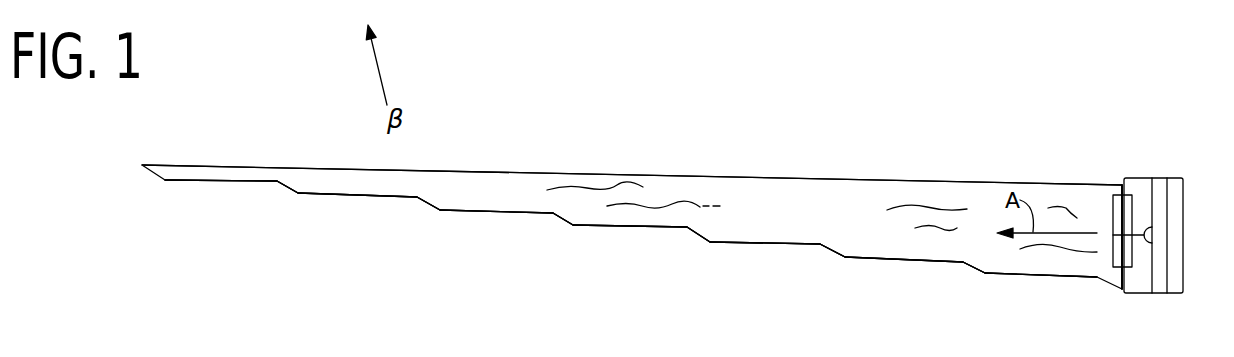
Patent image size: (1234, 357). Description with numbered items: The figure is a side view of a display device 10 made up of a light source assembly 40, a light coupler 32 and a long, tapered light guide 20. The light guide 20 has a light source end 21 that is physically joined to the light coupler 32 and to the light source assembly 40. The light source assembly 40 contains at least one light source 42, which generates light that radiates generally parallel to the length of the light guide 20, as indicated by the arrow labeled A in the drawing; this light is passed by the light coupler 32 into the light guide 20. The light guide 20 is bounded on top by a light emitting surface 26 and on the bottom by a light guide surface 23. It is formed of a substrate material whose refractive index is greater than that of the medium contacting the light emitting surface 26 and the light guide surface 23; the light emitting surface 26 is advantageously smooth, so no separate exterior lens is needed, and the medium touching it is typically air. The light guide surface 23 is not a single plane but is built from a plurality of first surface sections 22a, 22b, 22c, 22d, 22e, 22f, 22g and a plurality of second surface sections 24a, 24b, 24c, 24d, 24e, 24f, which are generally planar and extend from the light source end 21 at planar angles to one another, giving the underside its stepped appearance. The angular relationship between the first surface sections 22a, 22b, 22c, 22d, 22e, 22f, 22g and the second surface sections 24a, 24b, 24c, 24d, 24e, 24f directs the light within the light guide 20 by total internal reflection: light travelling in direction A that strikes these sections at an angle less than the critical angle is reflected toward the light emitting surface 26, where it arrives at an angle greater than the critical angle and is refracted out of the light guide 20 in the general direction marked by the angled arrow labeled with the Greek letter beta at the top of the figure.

The display device 10 is at (632, 188).
The light guide 20 is at (860, 217).
The light source end 21 is at (1118, 177).
The first surface section 22a is at (1038, 275).
The first surface section 22b is at (897, 263).
The first surface section 22c is at (762, 247).
The first surface section 22d is at (627, 232).
The first surface section 22e is at (490, 215).
The first surface section 22f is at (347, 196).
The first surface section 22g is at (203, 182).
The light guide surface 23 is at (670, 292).
The second surface section 24a is at (965, 264).
The second surface section 24b is at (833, 257).
The second surface section 24c is at (690, 231).
The second surface section 24d is at (557, 222).
The second surface section 24e is at (408, 204).
The second surface section 24f is at (287, 181).
The light emitting surface 26 is at (572, 173).
The light coupler 32 is at (1105, 220).
The light source assembly 40 is at (1155, 297).
The light source 42 is at (1147, 227).